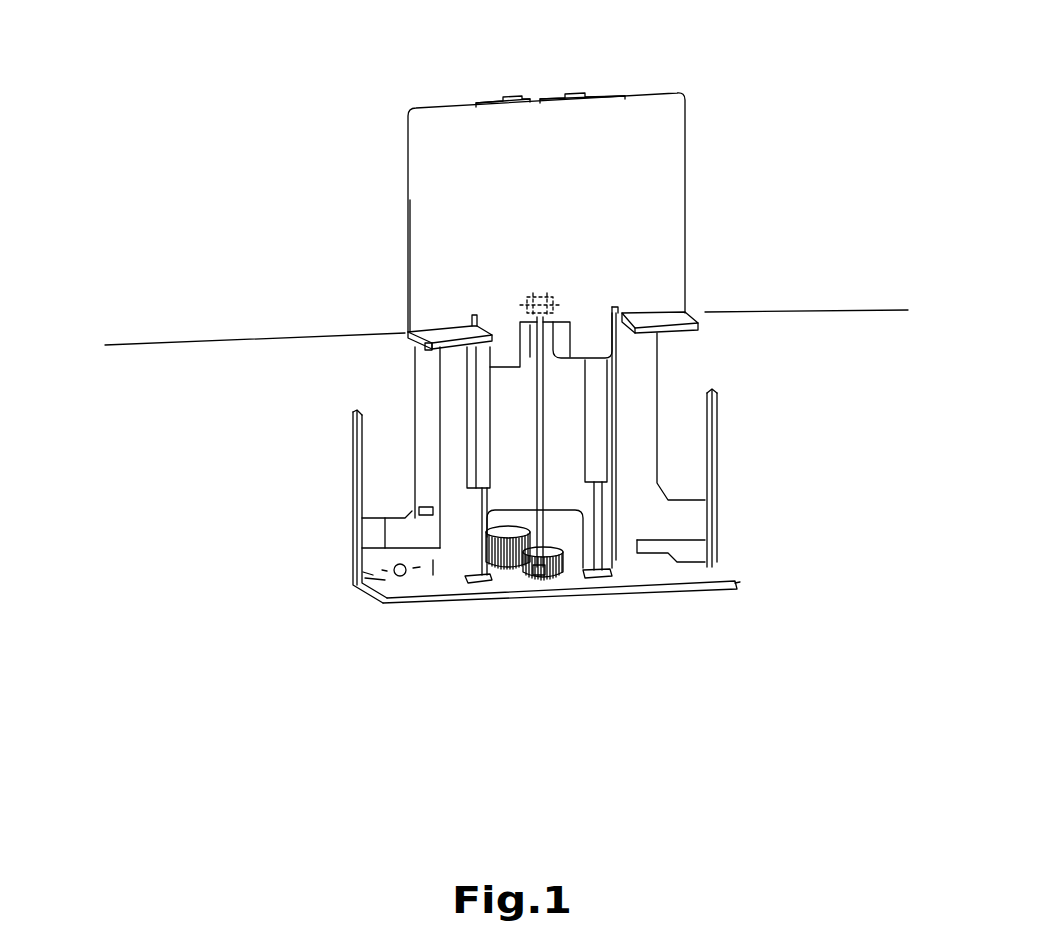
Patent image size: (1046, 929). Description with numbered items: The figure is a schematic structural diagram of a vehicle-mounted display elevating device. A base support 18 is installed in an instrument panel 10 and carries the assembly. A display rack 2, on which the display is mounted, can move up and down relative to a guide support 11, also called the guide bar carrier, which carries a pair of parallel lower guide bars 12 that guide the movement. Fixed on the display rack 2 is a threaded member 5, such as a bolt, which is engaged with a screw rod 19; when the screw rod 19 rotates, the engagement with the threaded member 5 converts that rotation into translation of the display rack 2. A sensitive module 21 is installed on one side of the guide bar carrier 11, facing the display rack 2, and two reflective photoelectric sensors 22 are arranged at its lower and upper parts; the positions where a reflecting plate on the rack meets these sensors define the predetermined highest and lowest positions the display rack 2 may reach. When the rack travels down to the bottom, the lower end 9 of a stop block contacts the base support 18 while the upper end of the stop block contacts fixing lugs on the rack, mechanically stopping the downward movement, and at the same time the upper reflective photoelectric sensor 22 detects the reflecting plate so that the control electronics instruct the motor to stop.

The display rack 2 is at (522, 140).
The threaded member 5 is at (556, 305).
The instrument panel 10 is at (183, 335).
The guide support 11 is at (630, 413).
The sensitive module 21 is at (422, 387).
The reflective photoelectric sensors 22 is at (427, 343).
The lower end of the stop block 9 is at (600, 478).
The screw rod 19 is at (540, 487).
The lower guide bars 12 is at (600, 548).
The base support 18 is at (693, 573).